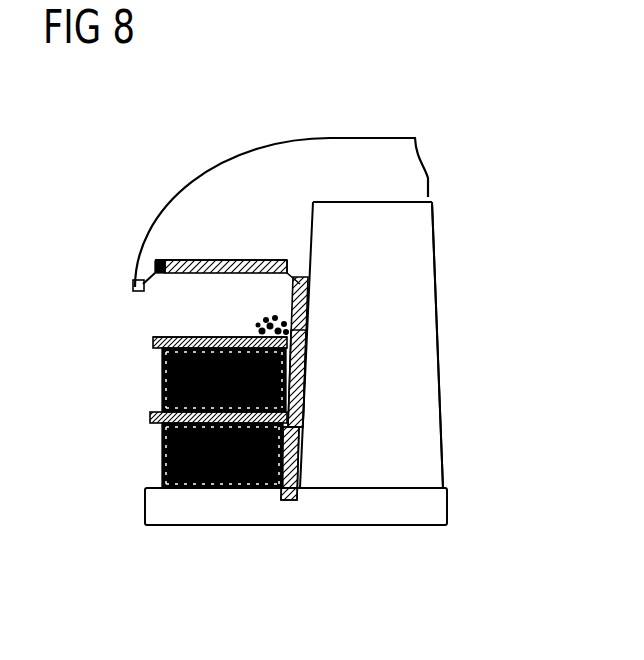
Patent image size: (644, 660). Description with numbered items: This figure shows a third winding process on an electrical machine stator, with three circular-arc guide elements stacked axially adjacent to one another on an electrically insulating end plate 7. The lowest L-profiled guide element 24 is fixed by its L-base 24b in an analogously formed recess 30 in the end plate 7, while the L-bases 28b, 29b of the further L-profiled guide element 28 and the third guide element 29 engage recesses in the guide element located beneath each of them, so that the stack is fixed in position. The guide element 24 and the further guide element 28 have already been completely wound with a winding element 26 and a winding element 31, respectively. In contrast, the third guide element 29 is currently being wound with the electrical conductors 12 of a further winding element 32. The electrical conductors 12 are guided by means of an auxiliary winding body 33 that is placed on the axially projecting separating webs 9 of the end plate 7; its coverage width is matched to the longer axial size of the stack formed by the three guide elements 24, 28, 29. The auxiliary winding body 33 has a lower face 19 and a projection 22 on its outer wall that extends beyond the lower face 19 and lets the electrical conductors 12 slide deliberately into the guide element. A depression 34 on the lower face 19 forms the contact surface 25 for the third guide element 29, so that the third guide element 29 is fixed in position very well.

The end plate 7 is at (449, 365).
The separating webs 9 is at (423, 287).
The electrical conductors 12 is at (258, 322).
The lower face 19 is at (133, 280).
The projection 22 is at (135, 288).
The L-profiled guide element 24 is at (150, 416).
The L-base 24b is at (299, 455).
The contact surface 25 is at (242, 262).
The winding element 26 is at (152, 453).
The further L-profiled guide element 28 is at (152, 343).
The L-base 28b is at (303, 395).
The third guide element 29 is at (137, 278).
The L-base 29b is at (303, 320).
The recess 30 is at (293, 500).
The winding element 31 is at (152, 385).
The further winding element 32 is at (172, 323).
The auxiliary winding body 33 is at (304, 153).
The depression 34 is at (208, 258).